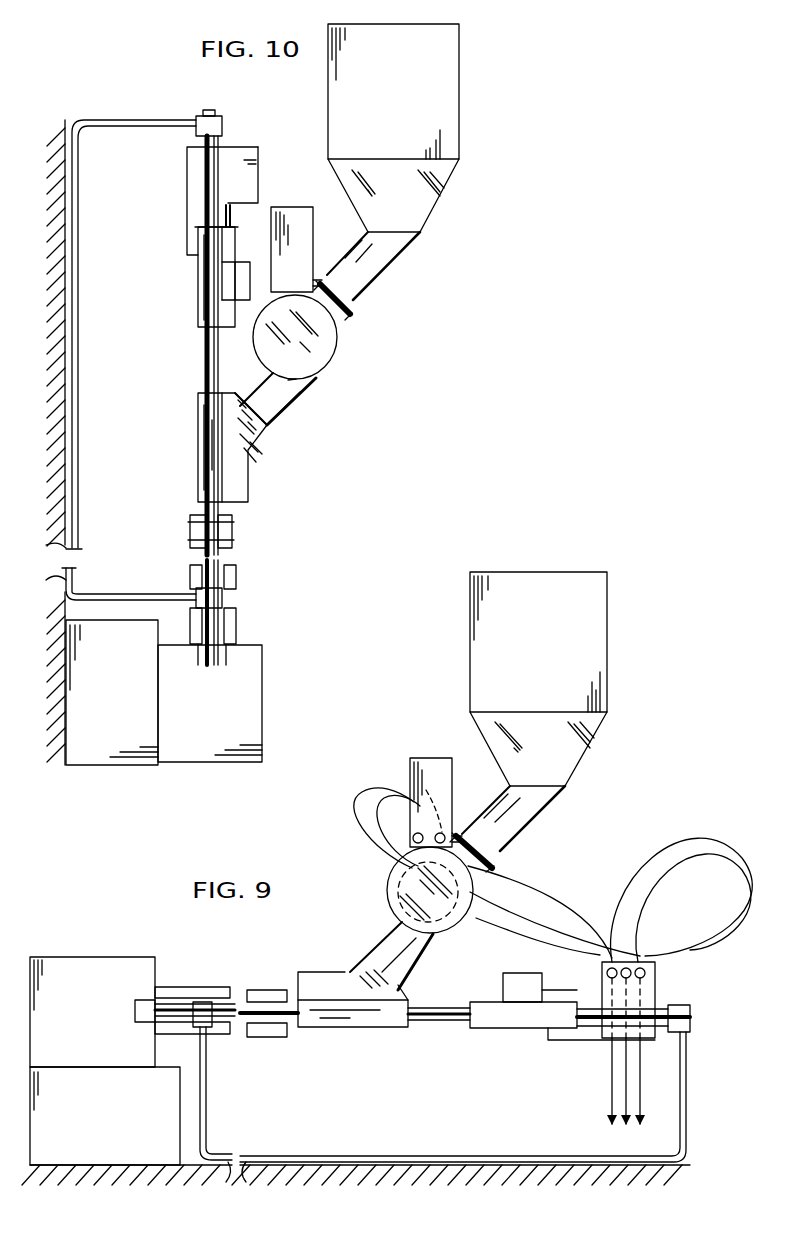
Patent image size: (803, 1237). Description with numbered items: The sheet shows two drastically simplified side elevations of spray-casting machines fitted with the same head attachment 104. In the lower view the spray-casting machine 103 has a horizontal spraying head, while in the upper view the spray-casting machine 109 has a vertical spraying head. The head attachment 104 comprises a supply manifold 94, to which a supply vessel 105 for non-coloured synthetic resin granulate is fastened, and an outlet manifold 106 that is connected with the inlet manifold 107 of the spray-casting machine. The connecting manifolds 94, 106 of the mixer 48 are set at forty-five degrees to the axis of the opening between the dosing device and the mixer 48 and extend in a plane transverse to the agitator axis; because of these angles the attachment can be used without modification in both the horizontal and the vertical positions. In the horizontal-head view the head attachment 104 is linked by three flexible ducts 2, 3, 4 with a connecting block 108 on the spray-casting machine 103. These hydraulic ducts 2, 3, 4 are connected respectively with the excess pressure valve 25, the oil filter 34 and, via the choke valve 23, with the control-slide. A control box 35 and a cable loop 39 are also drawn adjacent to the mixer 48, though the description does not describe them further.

In FIG. 10, the spray-casting machine 109 is at (136, 106).
In FIG. 10, the supply vessel 105 is at (452, 99).
In FIG. 9, the supply vessel 105 is at (602, 598).
In FIG. 10, the control box 35 is at (298, 214).
In FIG. 9, the control box 35 is at (410, 766).
In FIG. 10, the supply manifold 94 is at (350, 306).
In FIG. 9, the supply manifold 94 is at (498, 860).
In FIG. 10, the mixer 48 is at (332, 342).
In FIG. 9, the mixer 48 is at (452, 926).
In FIG. 10, the head attachment 104 is at (322, 378).
In FIG. 9, the head attachment 104 is at (384, 888).
In FIG. 10, the outlet manifold 106 is at (284, 404).
In FIG. 9, the outlet manifold 106 is at (388, 936).
In FIG. 10, the inlet manifold 107 is at (258, 450).
In FIG. 9, the inlet manifold 107 is at (410, 986).
In FIG. 9, the cable loop 39 is at (398, 860).
In FIG. 9, the flexible duct 2 is at (556, 896).
In FIG. 9, the flexible duct 3 is at (524, 928).
In FIG. 9, the flexible duct 4 is at (506, 936).
In FIG. 9, the connecting block 108 is at (656, 996).
In FIG. 9, the spray-casting machine 103 is at (82, 964).
In FIG. 9, the oil filter 34 is at (616, 1094).
In FIG. 9, the excess pressure valve 25 is at (626, 1130).
In FIG. 9, the choke valve 23 is at (646, 1098).